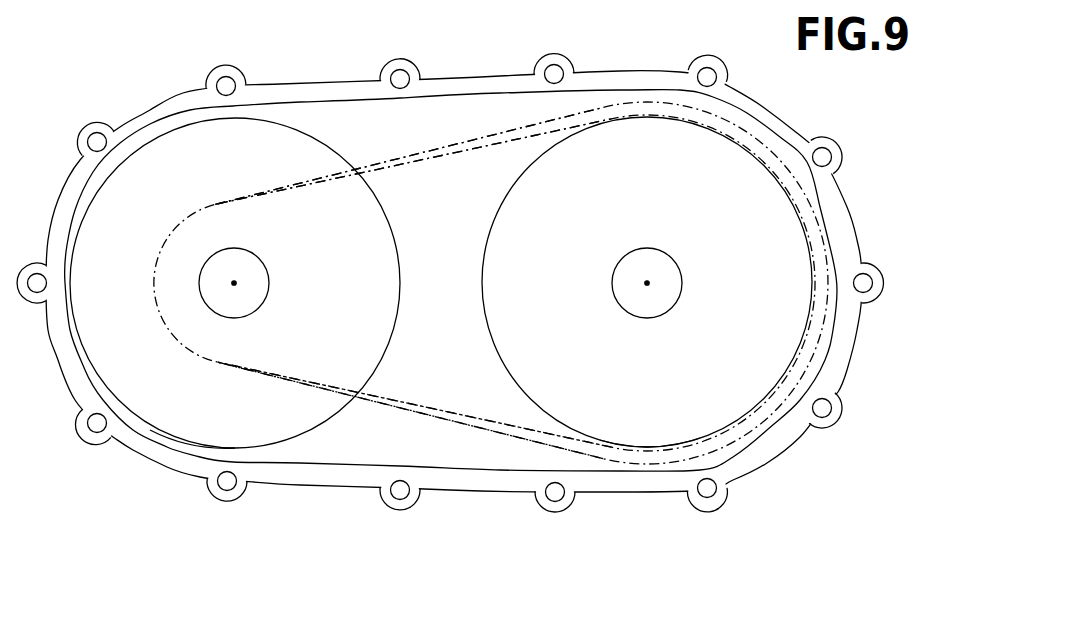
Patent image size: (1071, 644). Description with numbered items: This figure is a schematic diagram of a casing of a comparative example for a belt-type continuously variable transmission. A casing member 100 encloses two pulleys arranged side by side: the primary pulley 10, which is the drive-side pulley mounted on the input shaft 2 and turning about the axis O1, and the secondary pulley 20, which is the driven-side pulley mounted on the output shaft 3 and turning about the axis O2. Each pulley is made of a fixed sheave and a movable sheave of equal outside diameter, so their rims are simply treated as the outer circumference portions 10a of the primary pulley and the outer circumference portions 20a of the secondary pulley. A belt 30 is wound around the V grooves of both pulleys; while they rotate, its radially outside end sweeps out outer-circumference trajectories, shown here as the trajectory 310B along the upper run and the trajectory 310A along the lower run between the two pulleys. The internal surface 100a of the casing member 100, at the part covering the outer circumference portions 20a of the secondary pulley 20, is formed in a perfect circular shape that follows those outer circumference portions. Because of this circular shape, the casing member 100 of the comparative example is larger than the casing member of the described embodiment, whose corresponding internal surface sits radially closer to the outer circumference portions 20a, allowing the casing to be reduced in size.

The casing member 100 is at (184, 93).
The internal surface 100a is at (818, 215).
The primary pulley 10 is at (303, 127).
The outer circumference portions of the primary pulley 10a is at (192, 447).
The input shaft 2 is at (208, 308).
The axis of primary pulley O1 is at (234, 285).
The secondary pulley 20 is at (527, 398).
The outer circumference portions of the secondary pulley 20a is at (670, 447).
The output shaft 3 is at (672, 308).
The axis of secondary pulley O2 is at (647, 285).
The belt 30 is at (512, 128).
The outer-circumference trajectory 310A is at (460, 422).
The outer-circumference trajectory 310B is at (463, 140).